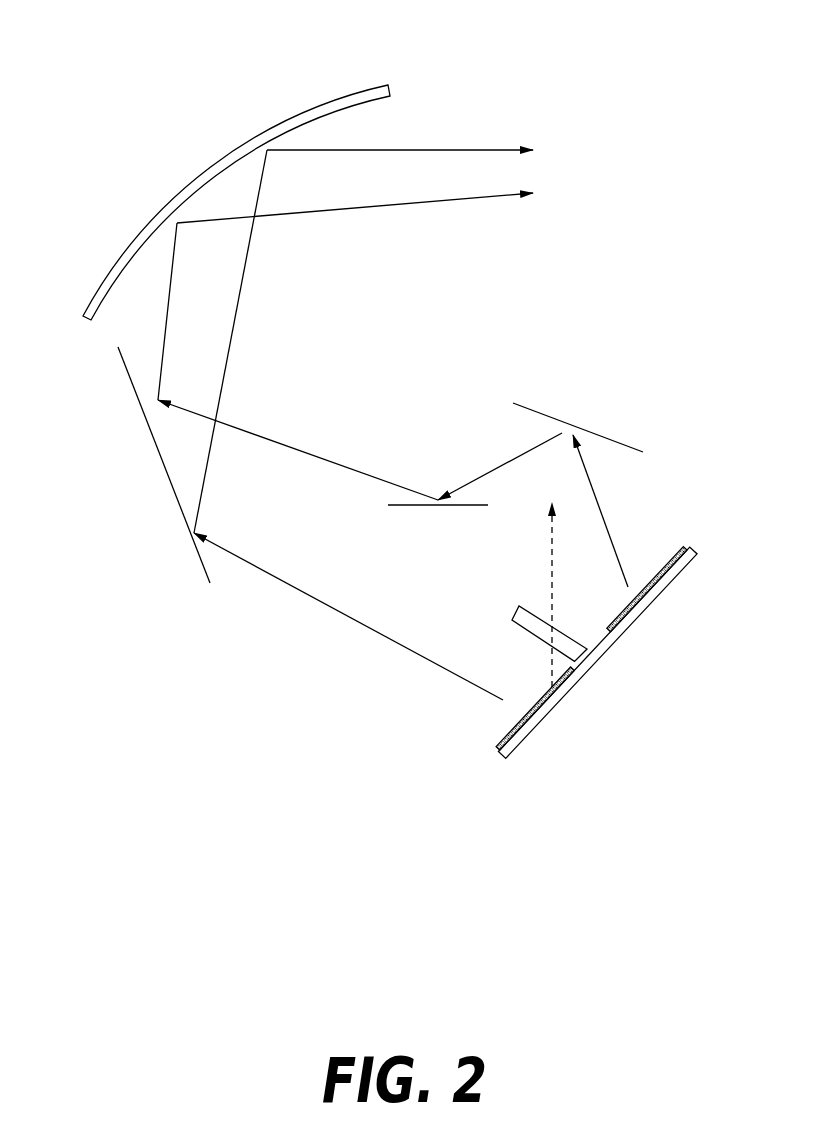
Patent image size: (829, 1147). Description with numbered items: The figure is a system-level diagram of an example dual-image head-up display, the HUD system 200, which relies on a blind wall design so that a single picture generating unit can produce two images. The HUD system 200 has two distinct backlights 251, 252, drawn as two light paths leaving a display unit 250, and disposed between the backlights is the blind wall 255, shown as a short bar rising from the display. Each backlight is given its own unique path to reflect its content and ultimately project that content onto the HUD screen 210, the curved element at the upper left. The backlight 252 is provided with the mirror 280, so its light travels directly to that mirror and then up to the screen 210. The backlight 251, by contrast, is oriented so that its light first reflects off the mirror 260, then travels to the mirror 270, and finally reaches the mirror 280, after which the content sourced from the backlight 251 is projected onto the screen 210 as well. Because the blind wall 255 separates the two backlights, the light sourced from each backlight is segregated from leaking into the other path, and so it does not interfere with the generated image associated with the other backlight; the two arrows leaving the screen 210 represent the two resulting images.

The HUD system 200 is at (730, 28).
The HUD screen 210 is at (205, 172).
The display 250 is at (615, 643).
The backlight 251 is at (610, 530).
The backlight 252 is at (410, 653).
The blind wall 255 is at (590, 660).
The mirror 260 is at (572, 422).
The mirror 270 is at (448, 507).
The mirror 280 is at (172, 488).